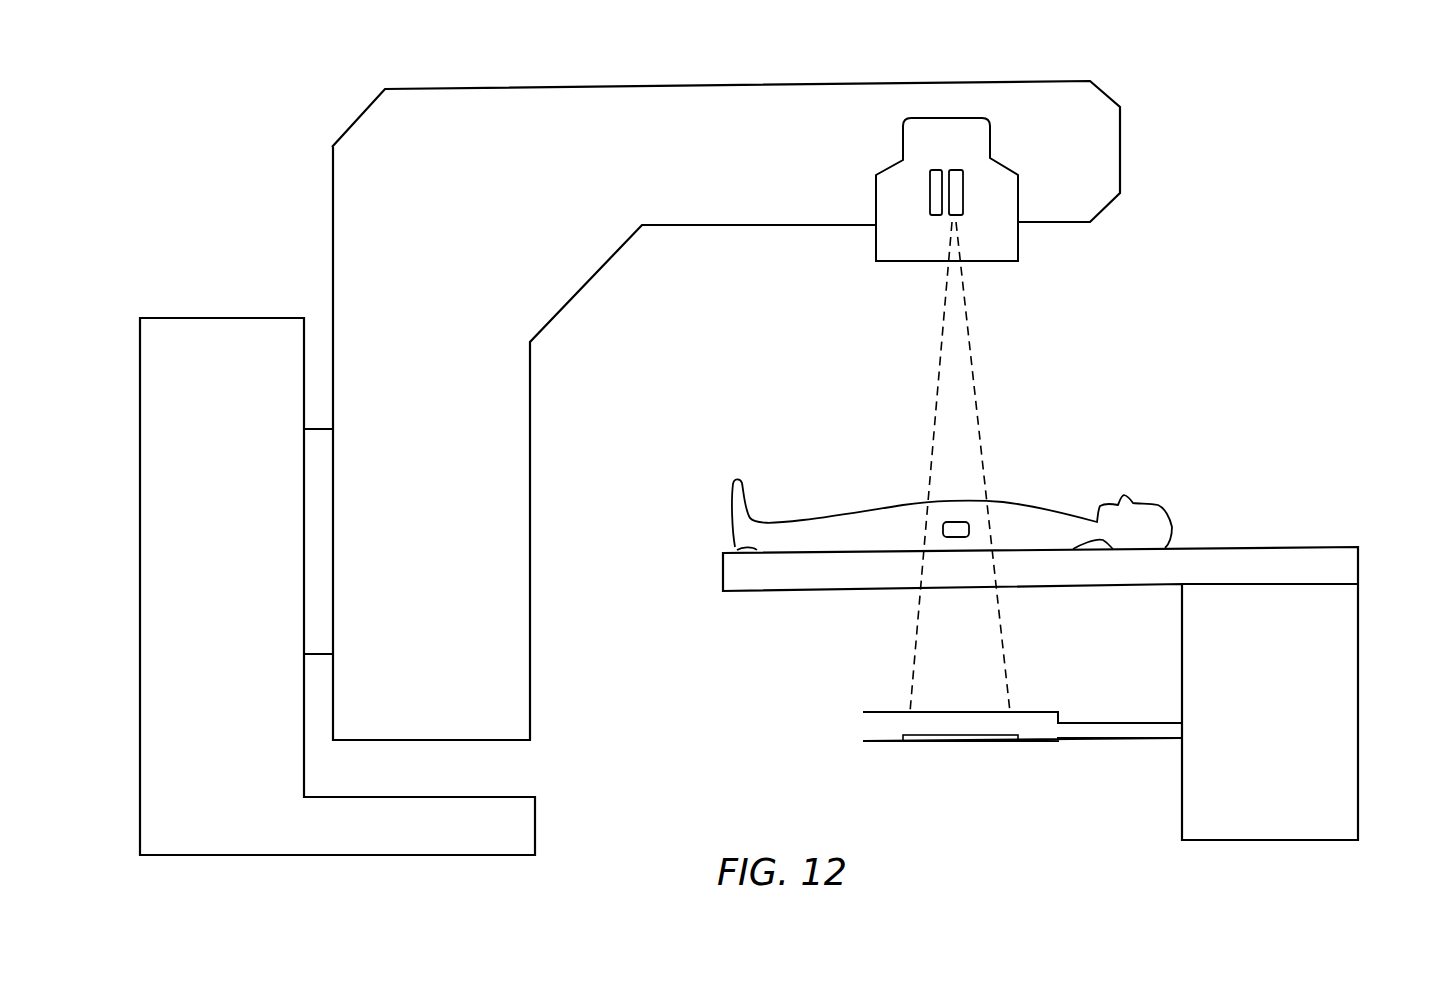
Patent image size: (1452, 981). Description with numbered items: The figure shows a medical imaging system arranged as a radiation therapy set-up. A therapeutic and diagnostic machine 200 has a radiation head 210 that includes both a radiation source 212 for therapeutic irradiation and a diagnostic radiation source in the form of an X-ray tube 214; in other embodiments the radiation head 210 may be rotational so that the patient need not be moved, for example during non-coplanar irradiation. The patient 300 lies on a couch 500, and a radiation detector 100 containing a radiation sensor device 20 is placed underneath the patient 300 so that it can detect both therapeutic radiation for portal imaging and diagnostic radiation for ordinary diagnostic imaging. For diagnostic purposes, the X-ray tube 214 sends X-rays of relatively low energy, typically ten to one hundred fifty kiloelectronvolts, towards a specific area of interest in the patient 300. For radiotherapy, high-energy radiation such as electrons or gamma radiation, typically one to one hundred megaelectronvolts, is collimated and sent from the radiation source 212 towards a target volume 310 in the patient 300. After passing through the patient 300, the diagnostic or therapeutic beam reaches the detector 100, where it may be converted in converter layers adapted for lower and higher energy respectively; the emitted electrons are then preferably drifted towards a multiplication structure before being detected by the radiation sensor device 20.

The therapeutic and diagnostic machine 200 is at (630, 468).
The radiation head 210 is at (948, 127).
The radiation source 212 is at (932, 180).
The X-ray tube 214 is at (955, 180).
The patient 300 is at (1165, 512).
The target volume 310 is at (969, 530).
The couch 500 is at (1358, 572).
The radiation detector 100 is at (1025, 723).
The radiation sensor device 20 is at (930, 742).